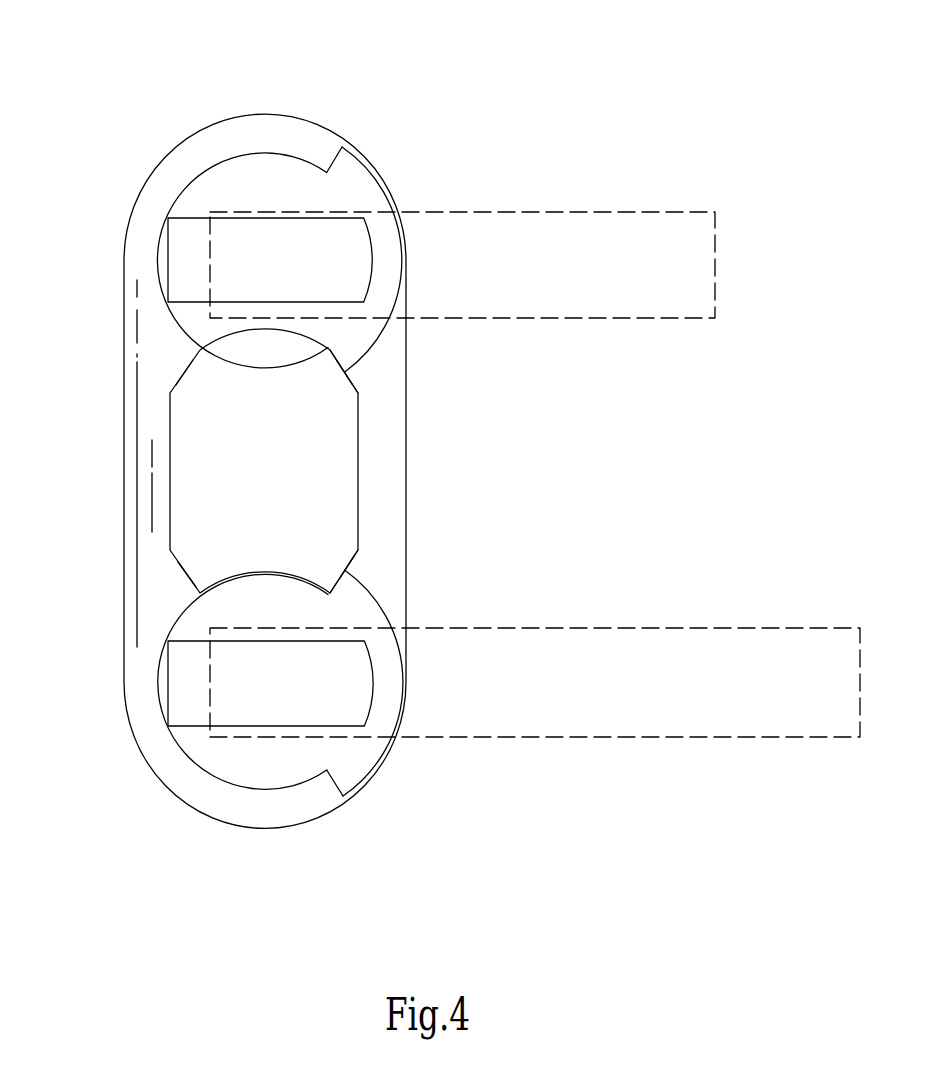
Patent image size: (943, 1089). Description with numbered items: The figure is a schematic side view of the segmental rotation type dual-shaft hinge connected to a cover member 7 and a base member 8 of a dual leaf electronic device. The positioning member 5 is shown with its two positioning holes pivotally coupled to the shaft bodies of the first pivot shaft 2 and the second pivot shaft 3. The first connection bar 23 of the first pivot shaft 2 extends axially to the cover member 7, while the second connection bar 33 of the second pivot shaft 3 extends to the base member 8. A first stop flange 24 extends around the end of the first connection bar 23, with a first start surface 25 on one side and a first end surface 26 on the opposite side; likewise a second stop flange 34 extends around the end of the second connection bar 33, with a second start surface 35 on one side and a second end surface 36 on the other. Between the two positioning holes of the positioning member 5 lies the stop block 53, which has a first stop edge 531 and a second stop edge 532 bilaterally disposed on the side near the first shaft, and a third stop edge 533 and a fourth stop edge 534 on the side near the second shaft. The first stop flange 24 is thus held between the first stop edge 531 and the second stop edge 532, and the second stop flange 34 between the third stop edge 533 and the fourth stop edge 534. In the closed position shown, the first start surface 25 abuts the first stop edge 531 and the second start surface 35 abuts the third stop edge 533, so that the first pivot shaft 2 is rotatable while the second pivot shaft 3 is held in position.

The positioning member 5 is at (124, 494).
The first pivot shaft 2 is at (167, 260).
The second pivot shaft 3 is at (180, 690).
The first connection bar 23 is at (183, 235).
The second connection bar 33 is at (190, 668).
The first stop flange 24 is at (386, 226).
The second stop flange 34 is at (387, 675).
The first start surface 25 is at (335, 358).
The second start surface 35 is at (335, 585).
The first end surface 26 is at (332, 157).
The second end surface 36 is at (328, 787).
The stop block 53 is at (343, 490).
The first stop edge 531 is at (345, 372).
The second stop edge 532 is at (181, 380).
The third stop edge 533 is at (349, 563).
The fourth stop edge 534 is at (193, 580).
The cover member 7 is at (600, 212).
The base member 8 is at (597, 628).